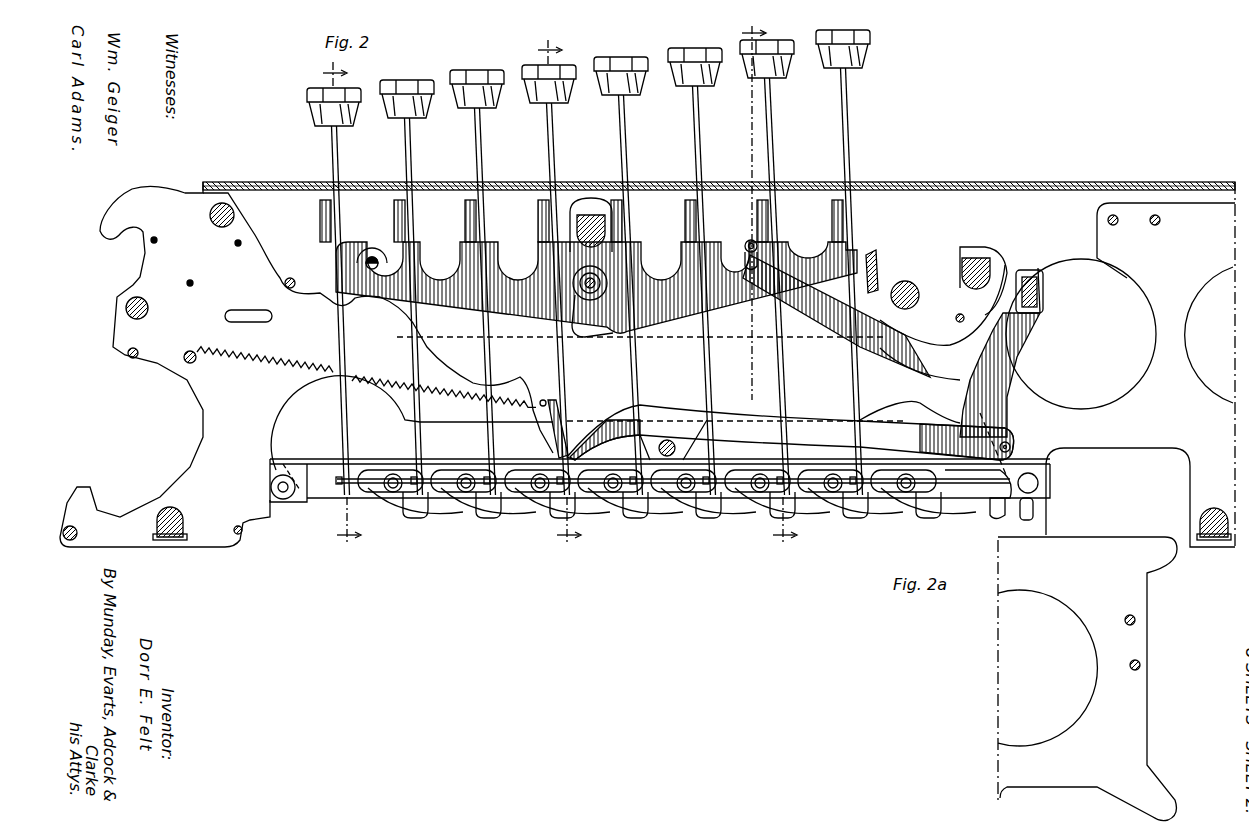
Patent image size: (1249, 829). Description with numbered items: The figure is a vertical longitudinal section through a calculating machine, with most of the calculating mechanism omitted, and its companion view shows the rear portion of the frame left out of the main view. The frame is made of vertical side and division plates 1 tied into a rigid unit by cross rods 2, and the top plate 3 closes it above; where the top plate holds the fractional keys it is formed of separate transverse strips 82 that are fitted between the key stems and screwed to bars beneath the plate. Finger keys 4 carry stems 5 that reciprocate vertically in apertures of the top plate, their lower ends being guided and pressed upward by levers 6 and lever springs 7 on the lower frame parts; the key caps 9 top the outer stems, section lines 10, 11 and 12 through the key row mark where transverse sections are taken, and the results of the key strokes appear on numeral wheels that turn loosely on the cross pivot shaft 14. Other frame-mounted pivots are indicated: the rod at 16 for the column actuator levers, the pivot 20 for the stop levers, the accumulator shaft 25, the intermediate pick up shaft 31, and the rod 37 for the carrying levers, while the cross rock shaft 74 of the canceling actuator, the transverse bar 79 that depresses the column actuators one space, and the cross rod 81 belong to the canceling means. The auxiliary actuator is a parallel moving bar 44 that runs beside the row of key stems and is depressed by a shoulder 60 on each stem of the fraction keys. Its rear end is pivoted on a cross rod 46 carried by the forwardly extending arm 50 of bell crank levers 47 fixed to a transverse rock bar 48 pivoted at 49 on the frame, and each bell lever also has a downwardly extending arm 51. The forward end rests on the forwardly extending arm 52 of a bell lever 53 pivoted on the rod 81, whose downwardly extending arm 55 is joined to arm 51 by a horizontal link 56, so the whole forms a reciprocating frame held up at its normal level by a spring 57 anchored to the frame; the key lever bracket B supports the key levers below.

In FIG. 2, the frame side and division plates 1 is at (182, 196).
In FIG. 2A, the frame side and division plates 1 is at (1050, 743).
In FIG. 2, the cross or tie rods 2 is at (234, 218).
In FIG. 2, the top plate 3 is at (278, 182).
In FIG. 2, the top plate strips 82 is at (435, 182).
In FIG. 2, the finger keys 4 is at (418, 82).
In FIG. 2, the key stems 5 is at (345, 160).
In FIG. 2, the levers 6 is at (338, 486).
In FIG. 2, the lever springs 7 is at (463, 515).
In FIG. 2, the key cap 9 is at (580, 78).
In FIG. 2, the fraction numeral wheel 10 is at (341, 304).
In FIG. 2, the fraction numeral wheel 11 is at (559, 293).
In FIG. 2, the numeral wheel 12 is at (761, 290).
In FIG. 2, the cross pivot shaft 14 is at (150, 244).
In FIG. 2A, the cross rod pivot 16 is at (1141, 664).
In FIG. 2, the stop lever pivot 20 is at (292, 279).
In FIG. 2A, the stop lever pivot 20 is at (1136, 618).
In FIG. 2, the cross pivot accumulator shaft 25 is at (188, 351).
In FIG. 2, the intermediate pick up shaft 31 is at (126, 310).
In FIG. 2, the cross pivot shaft or rod 37 is at (128, 356).
In FIG. 2, the parallel moving bar 44 is at (517, 305).
In FIG. 2, the cross rod 46 is at (745, 250).
In FIG. 2, the bell crank levers 47 is at (1020, 340).
In FIG. 2, the transverse rock bar 48 is at (1043, 296).
In FIG. 2, the rock bar pivot 49 is at (1036, 270).
In FIG. 2, the forwardly extending arm 50 is at (820, 300).
In FIG. 2, the downwardly extending arm 51 is at (1008, 412).
In FIG. 2, the forwardly extending arm 52 is at (405, 300).
In FIG. 2, the bell lever 53 is at (578, 333).
In FIG. 2, the downwardly extending arm 55 is at (550, 430).
In FIG. 2, the horizontal link 56 is at (795, 418).
In FIG. 2, the spring 57 is at (200, 362).
In FIG. 2, the shoulder 60 is at (320, 230).
In FIG. 2, the cross rock shaft 74 is at (908, 283).
In FIG. 2, the transverse bar 79 is at (873, 252).
In FIG. 2, the cross rod 81 is at (600, 280).
In FIG. 2, the key lever bracket B is at (318, 459).